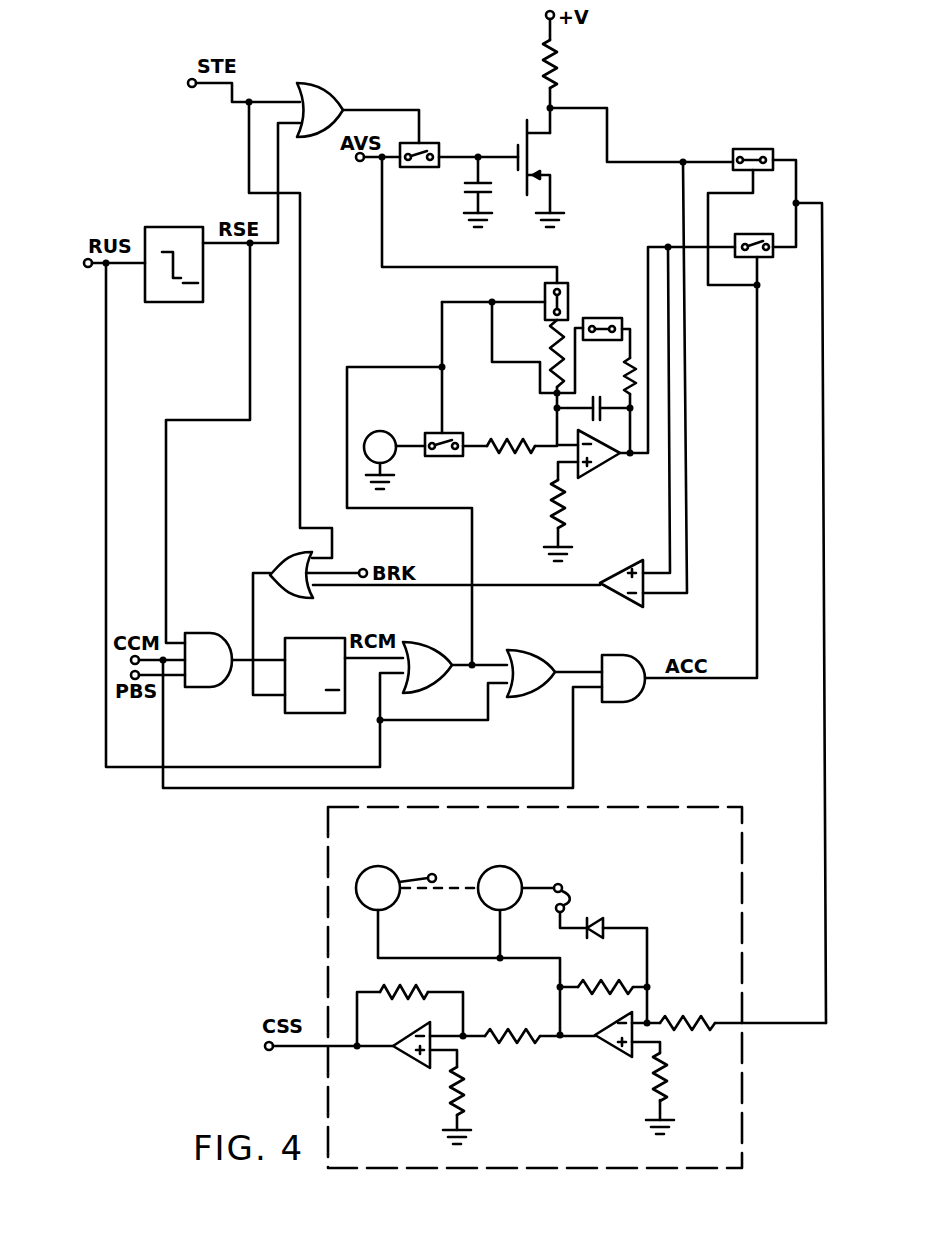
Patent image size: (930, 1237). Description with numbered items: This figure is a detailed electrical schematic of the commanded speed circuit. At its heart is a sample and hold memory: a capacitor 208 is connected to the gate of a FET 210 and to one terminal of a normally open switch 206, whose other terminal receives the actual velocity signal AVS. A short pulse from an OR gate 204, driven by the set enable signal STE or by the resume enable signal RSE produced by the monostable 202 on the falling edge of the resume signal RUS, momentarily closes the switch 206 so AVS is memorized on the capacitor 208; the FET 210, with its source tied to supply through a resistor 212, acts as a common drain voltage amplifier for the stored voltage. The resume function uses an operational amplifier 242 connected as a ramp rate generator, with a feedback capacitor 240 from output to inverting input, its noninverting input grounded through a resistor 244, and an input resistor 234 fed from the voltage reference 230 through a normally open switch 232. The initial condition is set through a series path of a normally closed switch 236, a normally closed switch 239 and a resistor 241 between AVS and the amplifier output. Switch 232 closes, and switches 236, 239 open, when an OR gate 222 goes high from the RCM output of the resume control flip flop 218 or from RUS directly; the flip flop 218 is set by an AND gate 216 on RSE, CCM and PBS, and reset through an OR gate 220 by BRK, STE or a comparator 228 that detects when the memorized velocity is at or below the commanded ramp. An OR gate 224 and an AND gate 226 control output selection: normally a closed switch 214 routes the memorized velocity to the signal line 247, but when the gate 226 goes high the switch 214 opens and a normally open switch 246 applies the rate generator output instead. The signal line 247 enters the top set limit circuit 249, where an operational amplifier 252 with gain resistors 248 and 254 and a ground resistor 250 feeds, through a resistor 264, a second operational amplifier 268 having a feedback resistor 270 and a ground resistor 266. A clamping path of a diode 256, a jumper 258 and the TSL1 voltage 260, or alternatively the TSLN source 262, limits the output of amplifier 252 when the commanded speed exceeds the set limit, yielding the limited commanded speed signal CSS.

The monostable 202 is at (152, 227).
The OR gate 204 is at (325, 94).
The normally open switch 206 is at (424, 143).
The capacitor 208 is at (490, 196).
The FET 210 is at (530, 152).
The resistor 212 is at (563, 59).
The normally closed switch 214 is at (750, 149).
The AND gate 216 is at (215, 640).
The resume control mode flip flop 218 is at (310, 638).
The OR gate 220 is at (280, 583).
The OR gate 222 is at (446, 636).
The OR gate 224 is at (553, 639).
The AND gate 226 is at (636, 668).
The comparator 228 is at (612, 573).
The voltage reference 230 is at (384, 431).
The normally open switch 232 is at (440, 456).
The input resistor 234 is at (512, 439).
The normally closed switch 236 is at (570, 293).
The normally closed switch 239 is at (619, 318).
The feedback capacitor 240 is at (586, 421).
The resistor 241 is at (633, 355).
The operational amplifier 242 is at (599, 469).
The resistor 244 is at (563, 510).
The normally open switch 246 is at (766, 257).
The signal line 247 is at (824, 440).
The gain resistor 248 is at (686, 1016).
The top set limit circuit 249 is at (777, 797).
The resistor 250 is at (665, 1082).
The operational amplifier 252 is at (612, 1048).
The gain resistor 254 is at (602, 980).
The diode 256 is at (598, 920).
The jumper 258 is at (570, 896).
The voltage 260 is at (514, 868).
The source 262 is at (366, 906).
The resistor 264 is at (508, 1034).
The resistor 266 is at (466, 1084).
The operational amplifier 268 is at (409, 1053).
The feedback resistor 270 is at (405, 988).